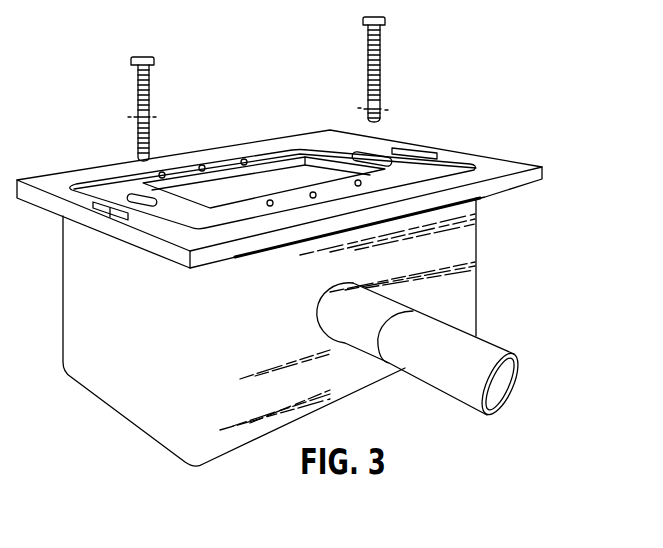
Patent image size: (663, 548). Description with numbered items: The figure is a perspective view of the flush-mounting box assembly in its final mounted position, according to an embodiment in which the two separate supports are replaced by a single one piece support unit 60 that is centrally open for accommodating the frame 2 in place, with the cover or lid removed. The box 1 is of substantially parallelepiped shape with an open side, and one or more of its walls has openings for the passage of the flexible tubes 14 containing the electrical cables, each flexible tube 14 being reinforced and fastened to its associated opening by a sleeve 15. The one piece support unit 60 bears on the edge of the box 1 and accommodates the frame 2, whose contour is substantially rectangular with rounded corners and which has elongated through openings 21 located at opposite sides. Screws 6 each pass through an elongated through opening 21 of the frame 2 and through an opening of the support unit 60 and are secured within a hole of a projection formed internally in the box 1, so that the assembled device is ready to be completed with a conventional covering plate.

The box 1 is at (108, 371).
The frame 2 is at (213, 163).
The screws 6 is at (150, 97).
The flexible tubes 14 is at (478, 357).
The sleeve 15 is at (370, 328).
The elongated through openings 21 is at (137, 197).
The one piece support unit 60 is at (503, 166).